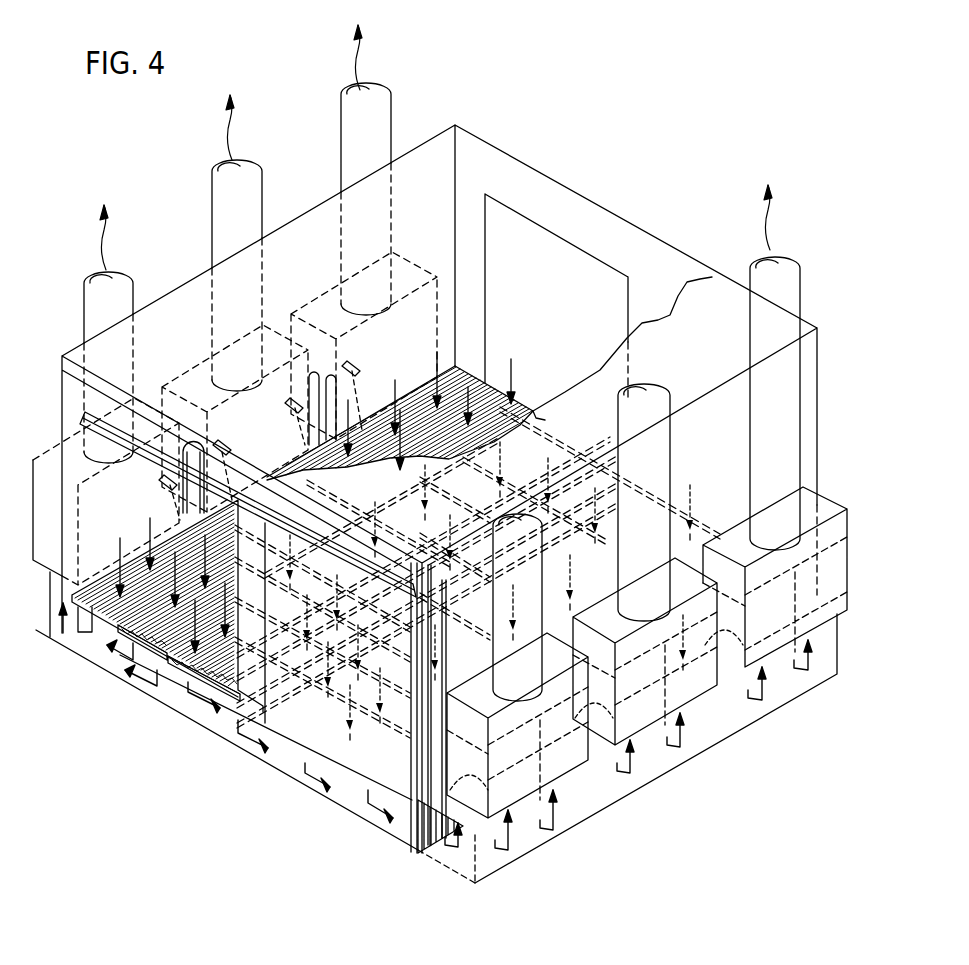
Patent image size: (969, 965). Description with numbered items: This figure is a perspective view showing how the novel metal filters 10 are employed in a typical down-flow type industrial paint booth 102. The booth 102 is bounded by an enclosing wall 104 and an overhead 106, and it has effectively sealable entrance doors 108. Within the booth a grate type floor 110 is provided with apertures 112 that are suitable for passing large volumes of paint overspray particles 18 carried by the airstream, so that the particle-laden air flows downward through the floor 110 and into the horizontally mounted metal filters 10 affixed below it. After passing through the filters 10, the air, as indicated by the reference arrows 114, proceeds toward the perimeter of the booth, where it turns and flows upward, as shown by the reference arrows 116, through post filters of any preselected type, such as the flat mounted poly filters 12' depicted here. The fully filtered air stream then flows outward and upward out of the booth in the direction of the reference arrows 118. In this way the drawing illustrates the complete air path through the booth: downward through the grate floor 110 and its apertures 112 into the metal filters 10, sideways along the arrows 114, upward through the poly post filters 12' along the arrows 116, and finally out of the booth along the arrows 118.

The paint booth 102 is at (455, 125).
The enclosing wall 104 is at (487, 172).
The overhead 106 is at (724, 318).
The entrance doors 108 is at (410, 800).
The grate type floor 110 is at (150, 657).
The apertures 112 is at (113, 627).
The reference arrows 114 is at (123, 658).
The reference arrows 116 is at (63, 637).
The reference arrows 118 is at (105, 255).
The paint overspray particles 18 is at (466, 344).
The filters 10 is at (175, 660).
The flat mounted poly filters 12' is at (440, 550).